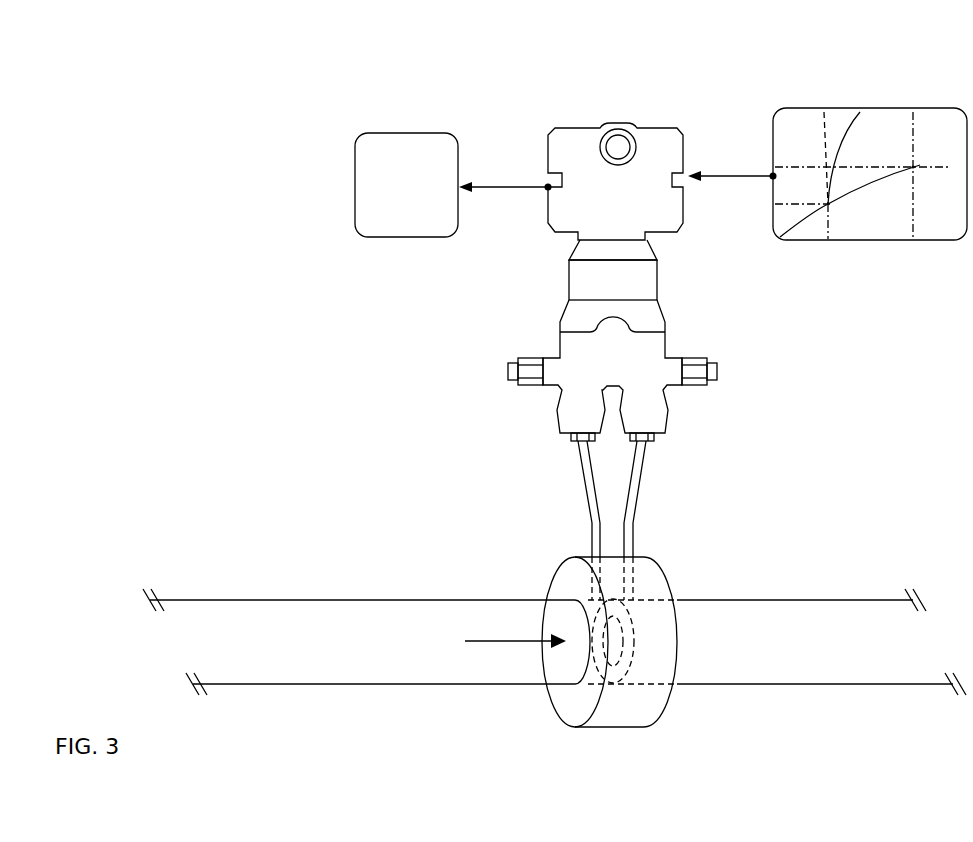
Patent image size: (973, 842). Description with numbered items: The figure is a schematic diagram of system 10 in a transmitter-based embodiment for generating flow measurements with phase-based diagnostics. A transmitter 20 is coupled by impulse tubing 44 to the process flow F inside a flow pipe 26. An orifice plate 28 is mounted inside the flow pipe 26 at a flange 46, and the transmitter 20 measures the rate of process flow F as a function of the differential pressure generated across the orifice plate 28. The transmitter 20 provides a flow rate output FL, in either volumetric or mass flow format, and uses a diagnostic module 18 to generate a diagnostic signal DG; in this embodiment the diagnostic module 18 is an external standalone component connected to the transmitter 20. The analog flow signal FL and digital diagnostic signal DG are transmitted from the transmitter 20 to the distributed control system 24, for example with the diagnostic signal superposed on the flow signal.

The system 10 is at (238, 226).
The diagnostic module 18 is at (773, 129).
The transmitter 20 is at (620, 123).
The distributed control system (DCS) 24 is at (384, 133).
The flow pipe 26 is at (292, 600).
The orifice plate 28 is at (629, 614).
The impulse tubing 44 is at (636, 484).
The flange 46 is at (658, 701).